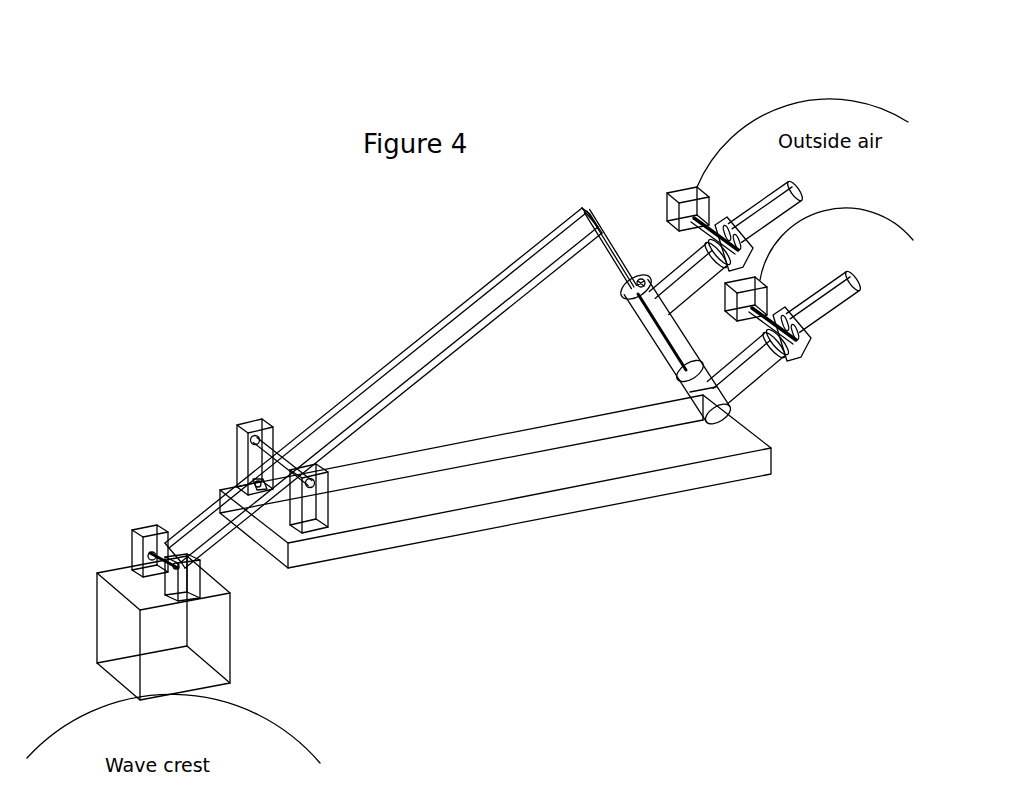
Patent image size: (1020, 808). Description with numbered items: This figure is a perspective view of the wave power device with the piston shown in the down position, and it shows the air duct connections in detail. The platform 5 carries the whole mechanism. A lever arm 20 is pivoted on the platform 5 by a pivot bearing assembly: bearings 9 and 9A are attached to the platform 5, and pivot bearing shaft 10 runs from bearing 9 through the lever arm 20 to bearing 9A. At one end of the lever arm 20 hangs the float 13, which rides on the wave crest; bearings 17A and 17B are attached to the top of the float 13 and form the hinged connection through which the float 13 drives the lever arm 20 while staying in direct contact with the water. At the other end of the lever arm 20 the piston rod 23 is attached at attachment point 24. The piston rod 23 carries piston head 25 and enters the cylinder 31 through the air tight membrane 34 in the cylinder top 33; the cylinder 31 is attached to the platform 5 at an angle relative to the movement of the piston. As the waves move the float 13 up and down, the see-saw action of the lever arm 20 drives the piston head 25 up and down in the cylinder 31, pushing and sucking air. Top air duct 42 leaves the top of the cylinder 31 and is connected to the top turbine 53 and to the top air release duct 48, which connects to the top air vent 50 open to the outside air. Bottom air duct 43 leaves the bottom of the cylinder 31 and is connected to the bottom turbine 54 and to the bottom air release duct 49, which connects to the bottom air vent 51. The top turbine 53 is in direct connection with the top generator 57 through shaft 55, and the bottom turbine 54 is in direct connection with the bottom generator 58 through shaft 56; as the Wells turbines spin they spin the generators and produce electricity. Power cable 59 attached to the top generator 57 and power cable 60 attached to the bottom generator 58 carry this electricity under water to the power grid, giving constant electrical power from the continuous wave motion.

The platform 5 is at (588, 413).
The bearing 9 is at (242, 423).
The bearing 9A is at (332, 513).
The pivot bearing shaft 10 is at (258, 450).
The float 13 is at (230, 668).
The bearing 17A is at (140, 537).
The bearing 17B is at (200, 565).
The lever arm 20 is at (427, 372).
The piston rod 23 is at (607, 238).
The attachment point 24 is at (588, 208).
The piston head 25 is at (676, 372).
The cylinder 31 is at (645, 340).
The cylinder top 33 is at (627, 290).
The air tight membrane 34 is at (638, 279).
The top air duct 42 is at (707, 284).
The bottom air duct 43 is at (749, 366).
The top air release duct 48 is at (792, 213).
The bottom air release duct 49 is at (839, 302).
The top air vent 50 is at (790, 182).
The bottom air vent 51 is at (869, 270).
The top turbine 53 is at (740, 244).
The bottom turbine 54 is at (811, 337).
The shaft 55 is at (696, 222).
The shaft 56 is at (750, 327).
The top generator 57 is at (687, 188).
The bottom generator 58 is at (766, 297).
The power cable 59 is at (808, 97).
The power cable 60 is at (866, 210).